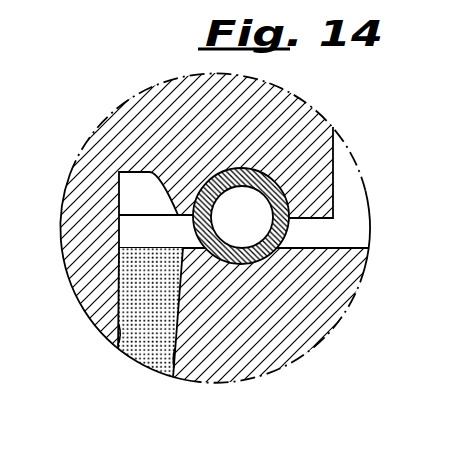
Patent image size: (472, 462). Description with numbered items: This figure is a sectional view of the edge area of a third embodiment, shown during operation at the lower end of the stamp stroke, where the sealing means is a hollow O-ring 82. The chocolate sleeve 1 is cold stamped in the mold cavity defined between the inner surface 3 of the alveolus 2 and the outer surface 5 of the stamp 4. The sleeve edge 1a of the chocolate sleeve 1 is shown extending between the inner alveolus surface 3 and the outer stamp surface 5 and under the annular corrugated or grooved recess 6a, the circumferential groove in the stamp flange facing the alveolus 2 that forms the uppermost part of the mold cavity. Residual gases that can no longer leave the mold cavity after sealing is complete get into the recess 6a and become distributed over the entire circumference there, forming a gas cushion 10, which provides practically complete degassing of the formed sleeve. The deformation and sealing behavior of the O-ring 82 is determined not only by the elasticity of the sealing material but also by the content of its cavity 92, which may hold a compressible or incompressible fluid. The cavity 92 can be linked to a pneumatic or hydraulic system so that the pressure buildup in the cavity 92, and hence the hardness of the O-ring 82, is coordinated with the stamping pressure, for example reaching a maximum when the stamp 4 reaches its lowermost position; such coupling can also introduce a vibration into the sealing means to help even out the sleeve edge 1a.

The chocolate sleeve 1 is at (133, 289).
The sleeve edge 1a is at (120, 230).
The alveolus 2 is at (308, 321).
The inner surface of the alveolus 3 is at (172, 349).
The stamp 4 is at (319, 183).
The outer surface of the stamp 5 is at (127, 328).
The corrugated or grooved recess 6a is at (131, 172).
The gas cushion 10 is at (140, 197).
The hollow O-ring 82 is at (286, 232).
The cavity of the O-ring 92 is at (247, 232).